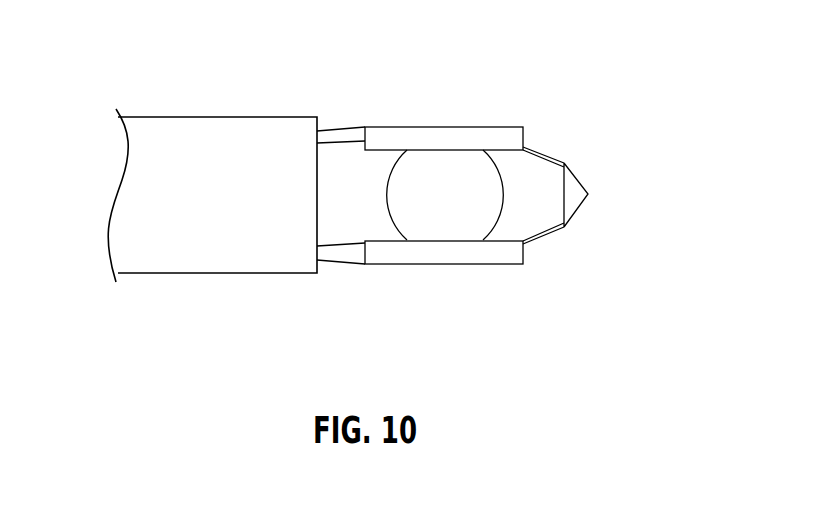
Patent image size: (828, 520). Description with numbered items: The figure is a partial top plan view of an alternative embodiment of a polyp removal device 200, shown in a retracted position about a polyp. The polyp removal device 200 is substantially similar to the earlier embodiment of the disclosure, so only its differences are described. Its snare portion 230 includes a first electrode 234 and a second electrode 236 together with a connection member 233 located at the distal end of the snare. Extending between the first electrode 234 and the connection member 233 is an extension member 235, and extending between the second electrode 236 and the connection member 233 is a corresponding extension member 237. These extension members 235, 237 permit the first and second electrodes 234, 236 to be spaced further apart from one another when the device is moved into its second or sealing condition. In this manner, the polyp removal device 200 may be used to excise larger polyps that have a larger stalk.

The polyp removal device 200 is at (195, 85).
The snare portion 230 is at (450, 77).
The connection member 233 is at (589, 194).
The first electrode 234 is at (448, 126).
The extension member 235 is at (543, 152).
The second electrode 236 is at (448, 268).
The extension member 237 is at (543, 240).